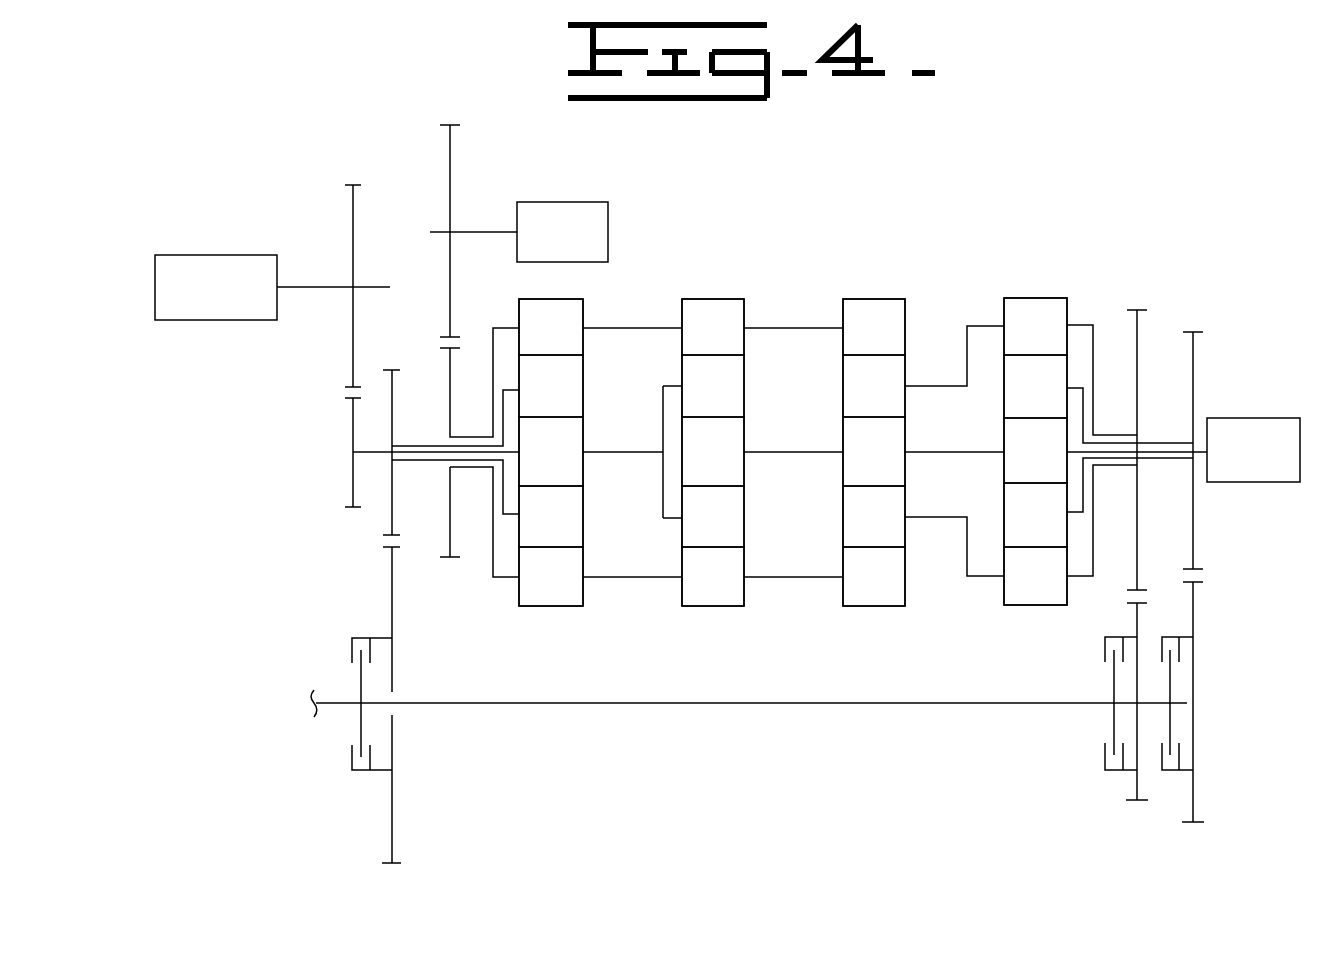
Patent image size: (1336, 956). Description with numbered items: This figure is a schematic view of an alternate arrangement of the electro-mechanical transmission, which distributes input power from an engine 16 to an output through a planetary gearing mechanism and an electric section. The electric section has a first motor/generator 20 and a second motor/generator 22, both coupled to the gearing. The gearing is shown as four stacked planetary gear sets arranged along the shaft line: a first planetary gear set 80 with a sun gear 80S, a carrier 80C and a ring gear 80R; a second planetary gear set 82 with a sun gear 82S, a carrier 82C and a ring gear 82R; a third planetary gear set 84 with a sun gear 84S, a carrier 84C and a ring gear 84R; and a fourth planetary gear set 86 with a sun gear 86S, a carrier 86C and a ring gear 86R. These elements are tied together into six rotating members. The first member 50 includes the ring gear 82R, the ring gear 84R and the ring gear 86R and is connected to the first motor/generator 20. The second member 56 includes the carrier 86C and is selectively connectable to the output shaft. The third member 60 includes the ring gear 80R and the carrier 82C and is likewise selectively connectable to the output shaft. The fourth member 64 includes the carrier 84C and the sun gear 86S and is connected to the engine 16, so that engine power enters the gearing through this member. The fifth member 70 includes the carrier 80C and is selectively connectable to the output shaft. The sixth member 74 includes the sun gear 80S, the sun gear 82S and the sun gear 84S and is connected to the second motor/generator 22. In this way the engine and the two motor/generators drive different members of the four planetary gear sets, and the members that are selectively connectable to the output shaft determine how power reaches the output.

The engine 16 is at (238, 255).
The first motor/generator 20 is at (582, 202).
The second motor/generator 22 is at (1257, 418).
The first member 50 is at (508, 326).
The second member 56 is at (506, 390).
The third member 60 is at (1076, 326).
The fourth member 64 is at (383, 452).
The fifth member 70 is at (1153, 459).
The sixth member 74 is at (1197, 458).
The first planetary gear set 80 is at (996, 497).
The sun gear 80S is at (1003, 431).
The carrier 80C is at (1003, 500).
The ring gear 80R is at (1006, 599).
The second planetary gear set 82 is at (906, 498).
The sun gear 82S is at (905, 425).
The carrier 82C is at (905, 505).
The ring gear 82R is at (905, 581).
The third planetary gear set 84 is at (749, 498).
The sun gear 84S is at (744, 460).
The carrier 84C is at (744, 506).
The ring gear 84R is at (744, 585).
The fourth planetary gear set 86 is at (584, 498).
The sun gear 86S is at (583, 463).
The carrier 86C is at (583, 522).
The ring gear 86R is at (583, 585).